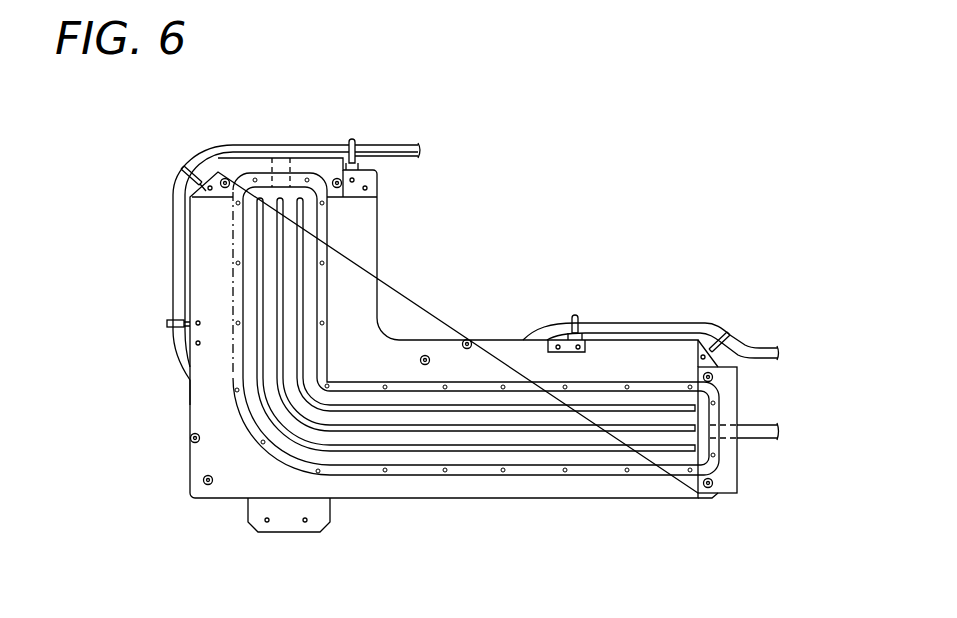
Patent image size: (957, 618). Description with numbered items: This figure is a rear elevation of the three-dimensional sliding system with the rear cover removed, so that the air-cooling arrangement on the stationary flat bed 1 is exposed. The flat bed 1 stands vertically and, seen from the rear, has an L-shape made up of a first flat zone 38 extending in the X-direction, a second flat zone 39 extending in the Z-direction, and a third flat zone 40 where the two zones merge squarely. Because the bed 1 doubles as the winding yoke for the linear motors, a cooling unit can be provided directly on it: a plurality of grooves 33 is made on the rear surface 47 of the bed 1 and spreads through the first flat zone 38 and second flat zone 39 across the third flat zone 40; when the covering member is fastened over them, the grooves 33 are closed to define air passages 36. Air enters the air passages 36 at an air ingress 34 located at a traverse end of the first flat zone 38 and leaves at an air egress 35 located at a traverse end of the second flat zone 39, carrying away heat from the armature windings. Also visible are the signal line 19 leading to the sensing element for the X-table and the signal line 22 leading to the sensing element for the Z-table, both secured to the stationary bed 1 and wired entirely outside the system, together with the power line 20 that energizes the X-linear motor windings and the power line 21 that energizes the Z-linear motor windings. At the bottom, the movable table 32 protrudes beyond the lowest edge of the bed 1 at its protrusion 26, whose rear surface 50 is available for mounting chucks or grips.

The flat bed 1 is at (353, 308).
The signal line 19 is at (658, 324).
The power line 20 is at (755, 436).
The power line 21 is at (398, 160).
The signal line 22 is at (255, 146).
The protrusion 26 is at (248, 511).
The movable table 32 is at (291, 518).
The grooves 33 is at (611, 462).
The air ingress 34 is at (732, 425).
The air egress 35 is at (281, 165).
The air passages 36 is at (468, 452).
The first flat zone 38 is at (498, 363).
The second flat zone 39 is at (212, 234).
The third flat zone 40 is at (222, 450).
The rear surface 47 is at (200, 392).
The rear surface 50 is at (315, 508).